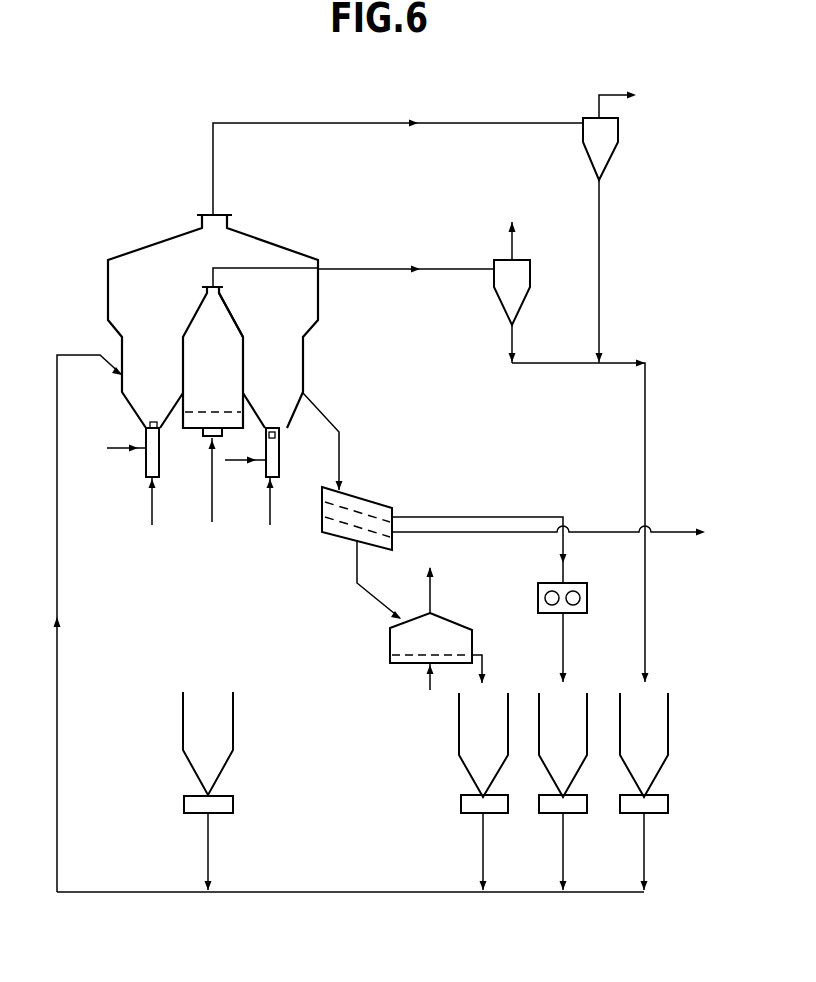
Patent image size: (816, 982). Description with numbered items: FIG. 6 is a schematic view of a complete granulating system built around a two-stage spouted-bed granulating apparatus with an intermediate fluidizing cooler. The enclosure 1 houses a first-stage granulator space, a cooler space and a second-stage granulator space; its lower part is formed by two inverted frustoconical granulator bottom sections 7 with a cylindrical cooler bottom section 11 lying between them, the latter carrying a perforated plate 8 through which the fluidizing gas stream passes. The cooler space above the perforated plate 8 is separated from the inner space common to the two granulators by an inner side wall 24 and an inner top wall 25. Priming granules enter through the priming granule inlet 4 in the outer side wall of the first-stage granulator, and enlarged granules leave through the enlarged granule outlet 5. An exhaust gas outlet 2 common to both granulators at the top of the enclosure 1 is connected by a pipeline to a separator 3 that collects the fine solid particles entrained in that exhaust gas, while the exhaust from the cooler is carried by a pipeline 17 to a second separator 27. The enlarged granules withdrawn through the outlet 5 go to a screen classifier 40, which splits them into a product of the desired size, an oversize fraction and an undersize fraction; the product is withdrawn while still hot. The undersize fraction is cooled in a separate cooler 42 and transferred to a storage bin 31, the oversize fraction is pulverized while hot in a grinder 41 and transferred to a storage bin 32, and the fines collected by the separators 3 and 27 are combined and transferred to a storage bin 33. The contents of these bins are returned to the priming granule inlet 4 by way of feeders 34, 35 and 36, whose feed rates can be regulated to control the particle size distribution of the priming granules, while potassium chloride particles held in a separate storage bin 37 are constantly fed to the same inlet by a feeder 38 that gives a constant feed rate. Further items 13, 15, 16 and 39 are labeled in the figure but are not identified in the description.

The enclosure 1 is at (162, 240).
The exhaust gas outlet 2 is at (208, 213).
The separator 3 is at (618, 130).
The priming granule inlet 4 is at (122, 377).
The enlarged granule outlet 5 is at (307, 393).
The granulator bottom section 7 is at (137, 418).
The perforated plate 8 is at (213, 410).
The cooler bottom section 11 is at (195, 432).
The fuel feed 13 is at (122, 450).
The air feed 15 is at (212, 505).
The air feed to burner 16 is at (153, 507).
The pipeline 17 is at (372, 267).
The inner side wall 24 is at (183, 362).
The inner top wall 25 is at (235, 315).
The separator 27 is at (530, 272).
The storage bin 31 is at (459, 735).
The storage bin 32 is at (540, 712).
The storage bin 33 is at (619, 717).
The feeder 34 is at (465, 815).
The feeder 35 is at (545, 815).
The feeder 36 is at (627, 815).
The storage bin 37 is at (235, 742).
The feeder 38 is at (233, 802).
The recycle conveyor line 39 is at (168, 892).
The screen classifier 40 is at (365, 497).
The grinder 41 is at (587, 595).
The cooler 42 is at (457, 623).